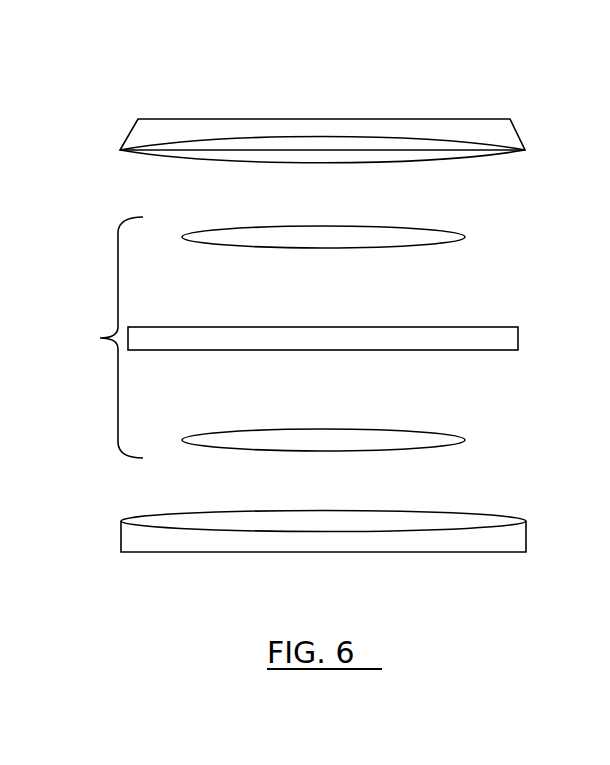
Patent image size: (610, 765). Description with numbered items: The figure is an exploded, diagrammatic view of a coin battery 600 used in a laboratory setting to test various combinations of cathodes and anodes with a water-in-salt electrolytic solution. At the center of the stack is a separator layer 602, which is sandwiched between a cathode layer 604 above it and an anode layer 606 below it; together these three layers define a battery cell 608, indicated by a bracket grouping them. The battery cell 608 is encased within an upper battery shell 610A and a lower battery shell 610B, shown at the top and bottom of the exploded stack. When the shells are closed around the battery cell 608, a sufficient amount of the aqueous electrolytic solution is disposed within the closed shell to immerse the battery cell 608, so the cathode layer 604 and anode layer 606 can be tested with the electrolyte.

The coin battery 600 is at (228, 66).
The separator layer 602 is at (518, 338).
The cathode layer 604 is at (465, 237).
The anode layer 606 is at (465, 440).
The battery cell 608 is at (100, 338).
The upper battery shell 610A is at (520, 135).
The lower battery shell 610B is at (518, 537).